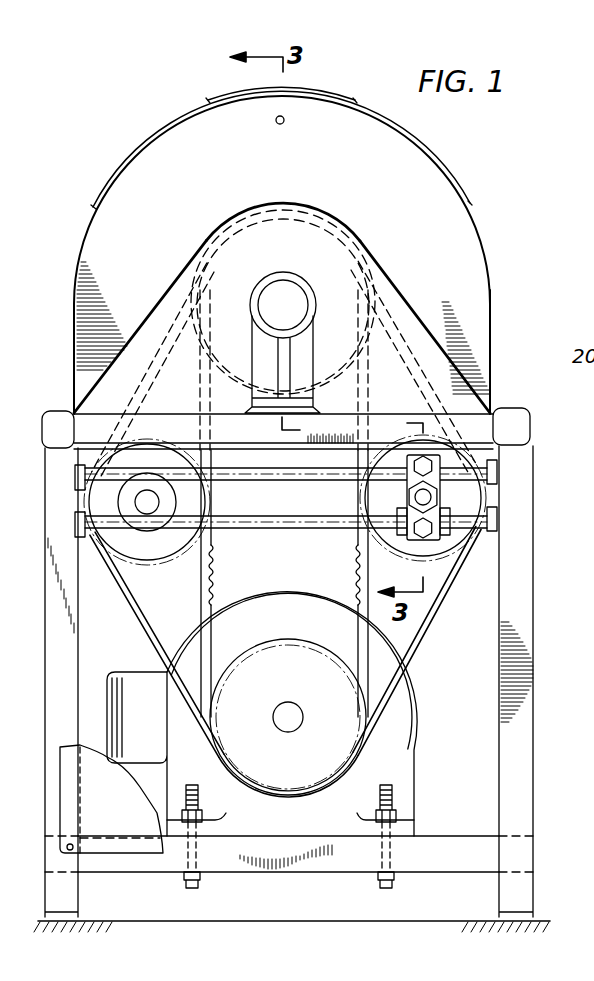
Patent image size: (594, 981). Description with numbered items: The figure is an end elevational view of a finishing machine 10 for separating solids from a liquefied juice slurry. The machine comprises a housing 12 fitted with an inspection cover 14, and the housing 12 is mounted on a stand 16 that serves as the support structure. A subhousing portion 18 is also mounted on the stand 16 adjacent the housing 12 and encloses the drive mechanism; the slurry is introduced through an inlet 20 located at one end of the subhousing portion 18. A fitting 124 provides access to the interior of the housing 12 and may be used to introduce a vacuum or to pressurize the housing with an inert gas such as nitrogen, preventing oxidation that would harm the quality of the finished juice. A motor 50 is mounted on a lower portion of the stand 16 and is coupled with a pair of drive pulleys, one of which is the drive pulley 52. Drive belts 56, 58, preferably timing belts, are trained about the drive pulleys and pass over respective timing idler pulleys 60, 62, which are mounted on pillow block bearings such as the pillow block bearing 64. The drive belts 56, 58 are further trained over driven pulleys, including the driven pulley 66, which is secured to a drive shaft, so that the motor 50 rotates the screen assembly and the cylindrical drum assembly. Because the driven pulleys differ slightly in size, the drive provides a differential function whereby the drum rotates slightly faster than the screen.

The finishing machine 10 is at (470, 178).
The housing 12 is at (492, 295).
The inspection cover 14 is at (232, 96).
The fitting 124 is at (276, 123).
The stand 16 is at (538, 780).
The subhousing portion 18 is at (393, 280).
The driven pulley 66 is at (313, 208).
The inlet 20 is at (284, 283).
The timing idler pulley 60 is at (362, 497).
The timing idler pulley 62 is at (173, 541).
The pillow block bearing 64 is at (367, 557).
The drive belt 56 is at (206, 600).
The drive belt 58 is at (150, 640).
The motor 50 is at (398, 710).
The drive pulley 52 is at (290, 650).